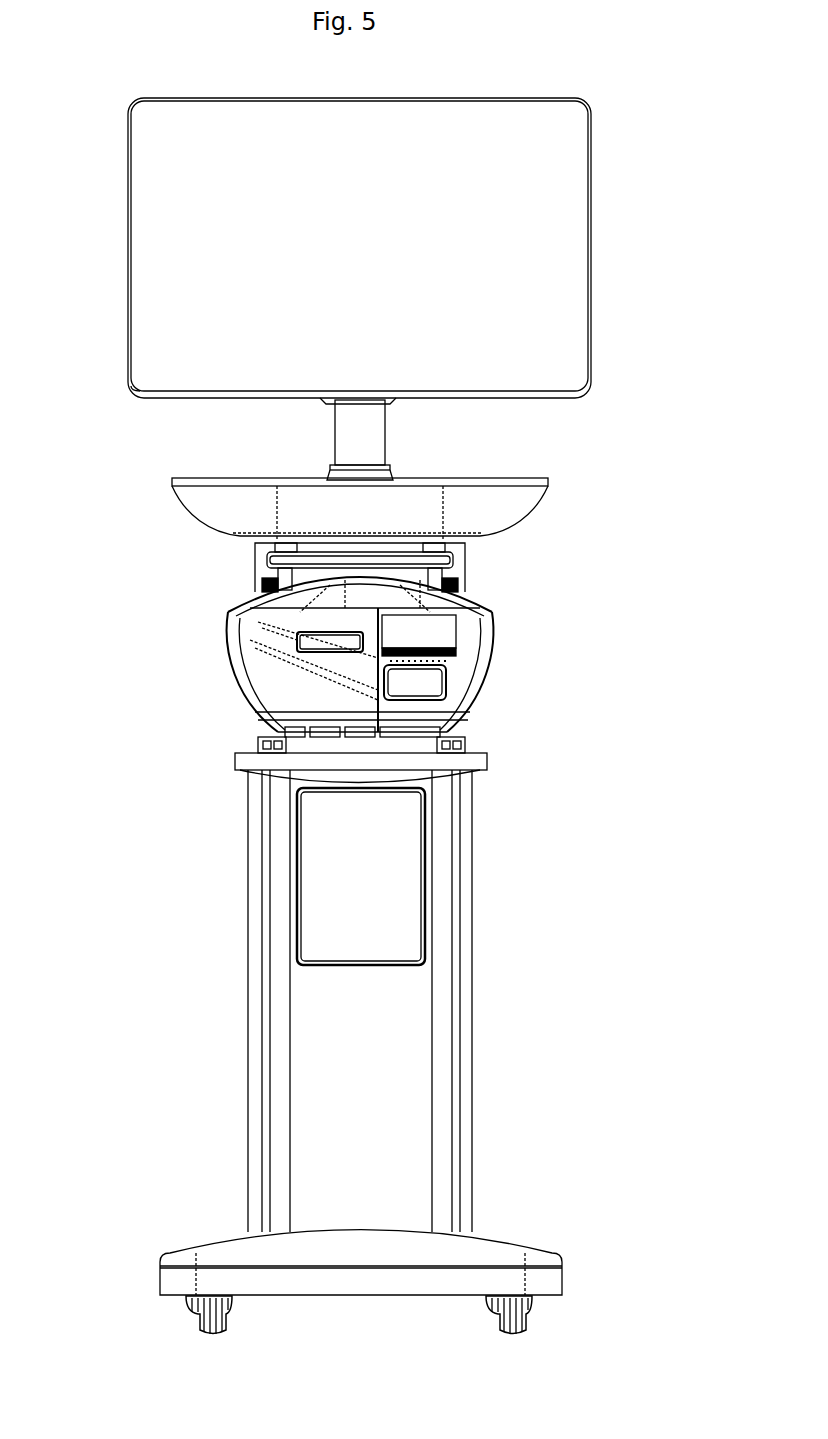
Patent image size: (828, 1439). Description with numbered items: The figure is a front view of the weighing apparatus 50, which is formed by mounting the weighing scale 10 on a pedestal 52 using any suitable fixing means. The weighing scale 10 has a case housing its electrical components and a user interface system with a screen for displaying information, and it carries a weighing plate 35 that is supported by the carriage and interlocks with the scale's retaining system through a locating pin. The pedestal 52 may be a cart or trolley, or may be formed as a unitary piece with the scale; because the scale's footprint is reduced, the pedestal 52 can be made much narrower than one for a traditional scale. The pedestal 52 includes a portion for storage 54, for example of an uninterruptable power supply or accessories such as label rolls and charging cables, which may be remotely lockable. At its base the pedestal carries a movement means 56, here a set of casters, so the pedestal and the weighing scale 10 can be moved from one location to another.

The weighing apparatus 50 is at (646, 270).
The weighing plate 35 is at (540, 506).
The weighing scale 10 is at (205, 602).
The pedestal 52 is at (483, 843).
The portion for storage 54 is at (315, 905).
The movement means 56 is at (531, 1315).